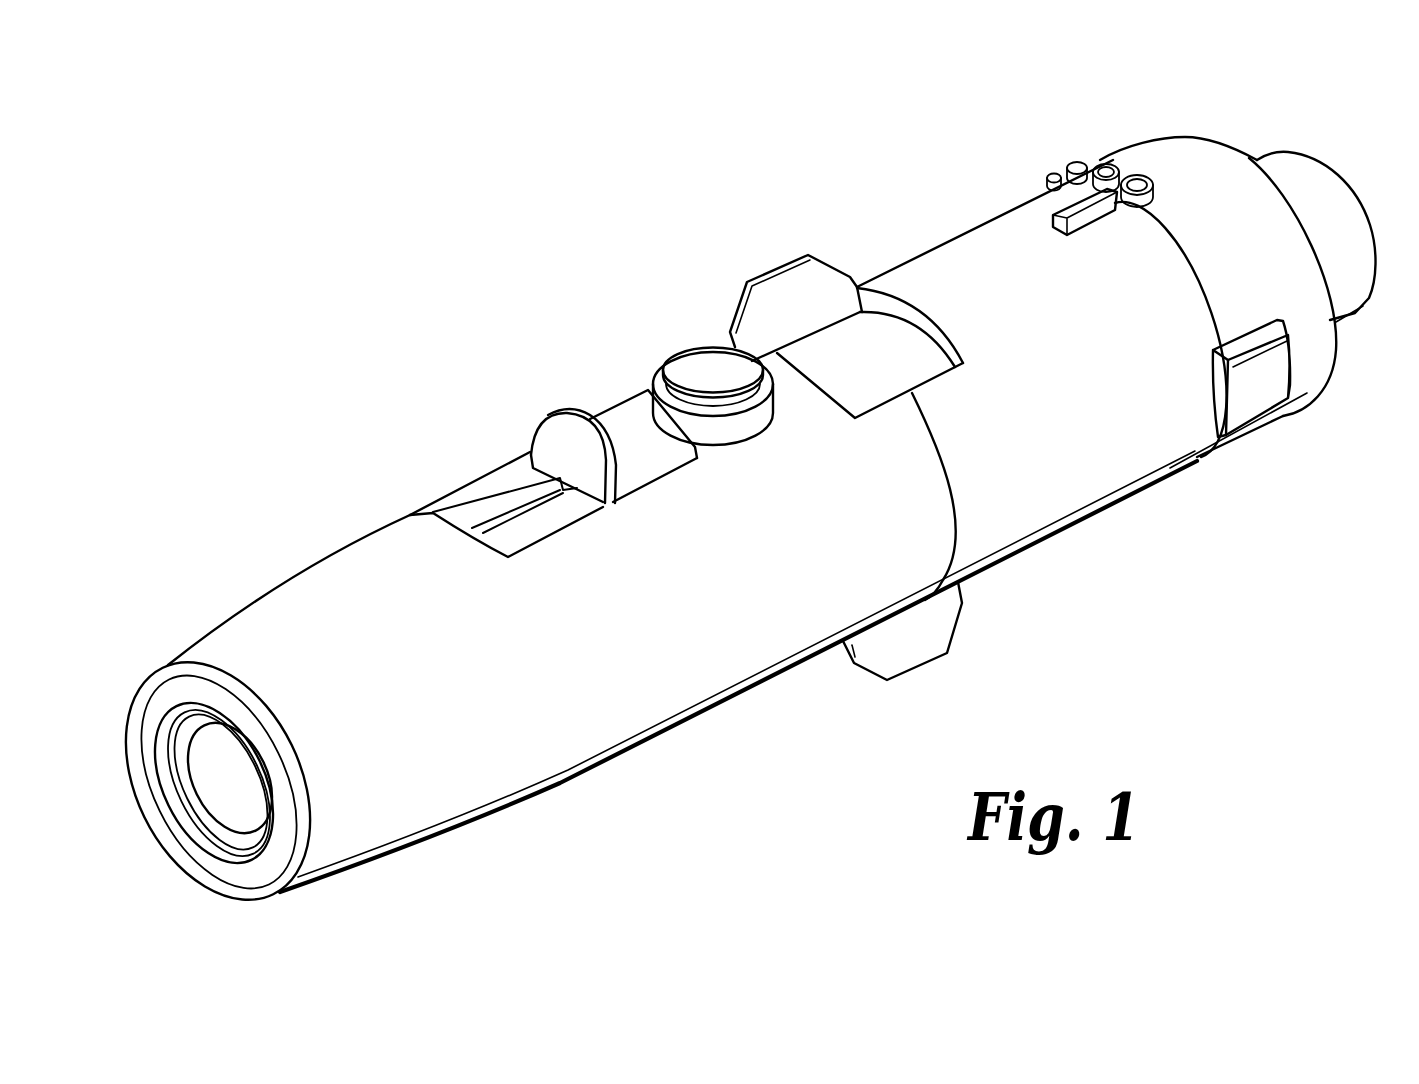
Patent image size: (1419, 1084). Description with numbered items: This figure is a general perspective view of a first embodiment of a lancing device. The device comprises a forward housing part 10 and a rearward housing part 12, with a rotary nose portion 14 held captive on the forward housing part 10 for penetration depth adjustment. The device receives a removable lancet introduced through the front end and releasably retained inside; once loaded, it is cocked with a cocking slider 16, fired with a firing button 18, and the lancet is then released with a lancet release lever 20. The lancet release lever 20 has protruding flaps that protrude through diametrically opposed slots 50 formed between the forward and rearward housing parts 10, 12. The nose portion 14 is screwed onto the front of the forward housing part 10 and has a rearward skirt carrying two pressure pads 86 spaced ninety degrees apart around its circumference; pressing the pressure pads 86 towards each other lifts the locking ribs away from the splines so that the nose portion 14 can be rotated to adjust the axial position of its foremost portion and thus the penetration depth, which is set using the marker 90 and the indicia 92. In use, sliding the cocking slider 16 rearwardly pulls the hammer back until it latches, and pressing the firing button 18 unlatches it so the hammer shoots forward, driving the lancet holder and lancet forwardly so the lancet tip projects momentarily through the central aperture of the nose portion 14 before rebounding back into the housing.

The forward housing part 10 is at (1050, 505).
The rearward housing part 12 is at (682, 658).
The rotary nose portion 14 is at (1213, 156).
The cocking slider 16 is at (557, 413).
The firing button 18 is at (693, 363).
The lancet release lever 20 is at (775, 254).
The slots 50 is at (878, 357).
The pressure pads 86 is at (1258, 390).
The marker 90 is at (1082, 220).
The indicia 92 is at (1093, 165).